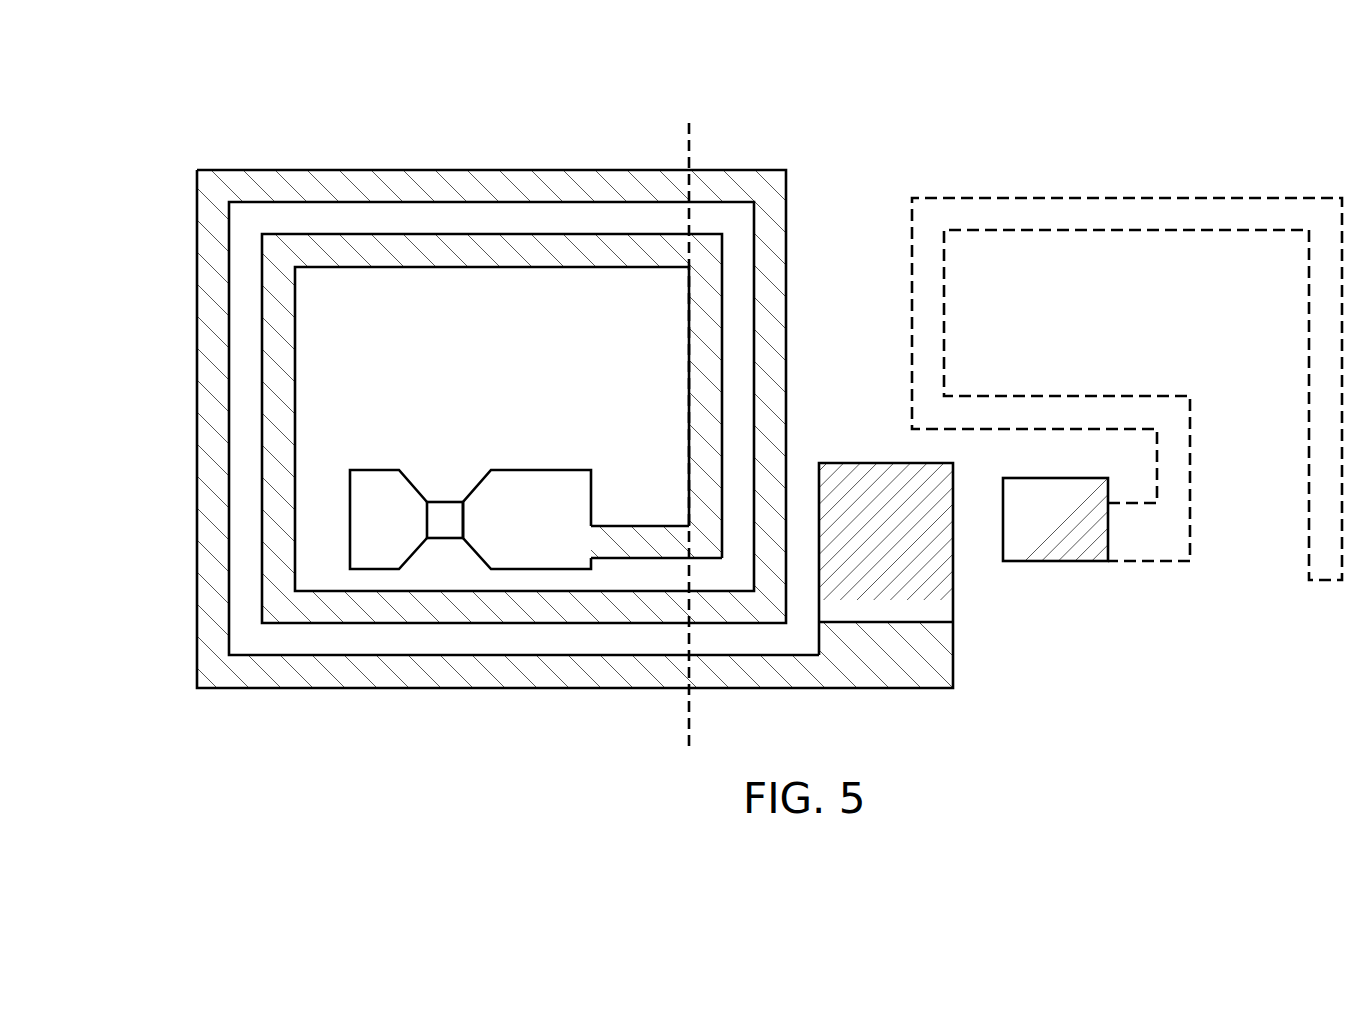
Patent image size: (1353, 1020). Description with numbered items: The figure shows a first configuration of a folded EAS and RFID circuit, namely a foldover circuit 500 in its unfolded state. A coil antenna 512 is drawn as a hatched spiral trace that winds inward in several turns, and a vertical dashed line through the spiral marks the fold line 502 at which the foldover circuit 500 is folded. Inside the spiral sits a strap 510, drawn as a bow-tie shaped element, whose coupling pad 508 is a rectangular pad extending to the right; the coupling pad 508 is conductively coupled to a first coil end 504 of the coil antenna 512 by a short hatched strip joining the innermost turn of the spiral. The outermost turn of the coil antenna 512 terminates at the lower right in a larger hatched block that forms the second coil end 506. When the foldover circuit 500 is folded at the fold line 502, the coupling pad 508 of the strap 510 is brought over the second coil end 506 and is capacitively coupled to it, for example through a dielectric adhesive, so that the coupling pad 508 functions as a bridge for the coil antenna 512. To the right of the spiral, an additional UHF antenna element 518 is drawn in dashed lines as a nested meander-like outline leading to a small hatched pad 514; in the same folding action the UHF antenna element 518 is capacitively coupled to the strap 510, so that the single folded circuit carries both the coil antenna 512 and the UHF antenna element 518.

The foldover circuit 500 is at (150, 132).
The fold line 502 is at (685, 748).
The first coil end 504 is at (597, 538).
The second coil end 506 is at (926, 587).
The coupling pad 508 is at (530, 487).
The strap 510 is at (375, 465).
The coil antenna 512 is at (342, 169).
The contact pad 514 is at (1119, 550).
The UHF antenna element 518 is at (1118, 197).